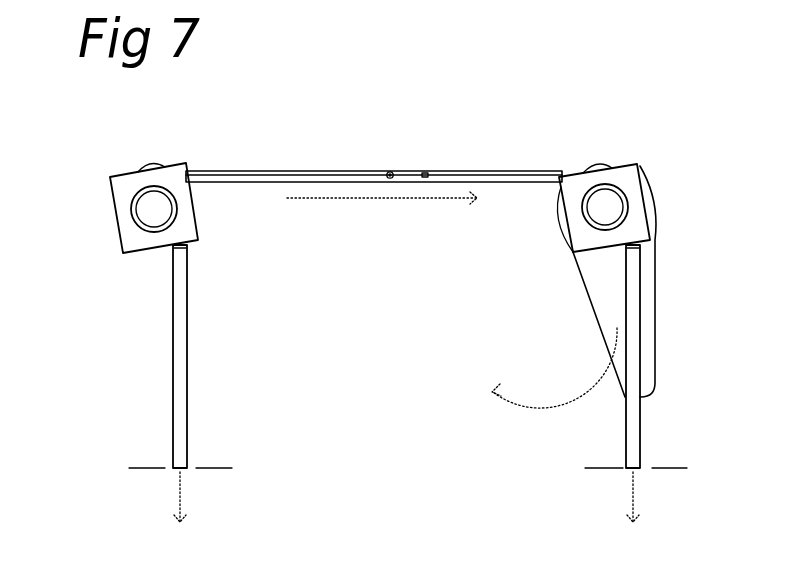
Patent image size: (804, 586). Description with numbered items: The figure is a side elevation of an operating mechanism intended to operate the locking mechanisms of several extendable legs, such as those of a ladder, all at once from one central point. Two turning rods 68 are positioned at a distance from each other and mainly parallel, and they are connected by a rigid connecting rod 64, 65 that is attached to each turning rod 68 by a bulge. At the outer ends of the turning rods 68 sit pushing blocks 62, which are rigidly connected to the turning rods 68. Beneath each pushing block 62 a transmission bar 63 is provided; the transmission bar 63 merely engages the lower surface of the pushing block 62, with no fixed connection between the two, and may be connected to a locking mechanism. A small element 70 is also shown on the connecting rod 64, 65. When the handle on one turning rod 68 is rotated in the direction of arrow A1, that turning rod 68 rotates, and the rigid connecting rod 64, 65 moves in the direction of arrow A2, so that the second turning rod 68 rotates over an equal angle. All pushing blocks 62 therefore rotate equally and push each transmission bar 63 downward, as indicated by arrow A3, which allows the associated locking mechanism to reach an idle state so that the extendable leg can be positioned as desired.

The pushing block 62 is at (122, 192).
The transmission bar 63 is at (182, 372).
The connecting rod 64 is at (258, 174).
The connecting rod 65 is at (505, 178).
The turning rod 68 is at (154, 209).
The locking element 70 is at (390, 175).
The direction of rotation of the handle A1 is at (538, 408).
The direction of movement of the connecting rod A2 is at (373, 199).
The lowering direction A3 is at (632, 495).